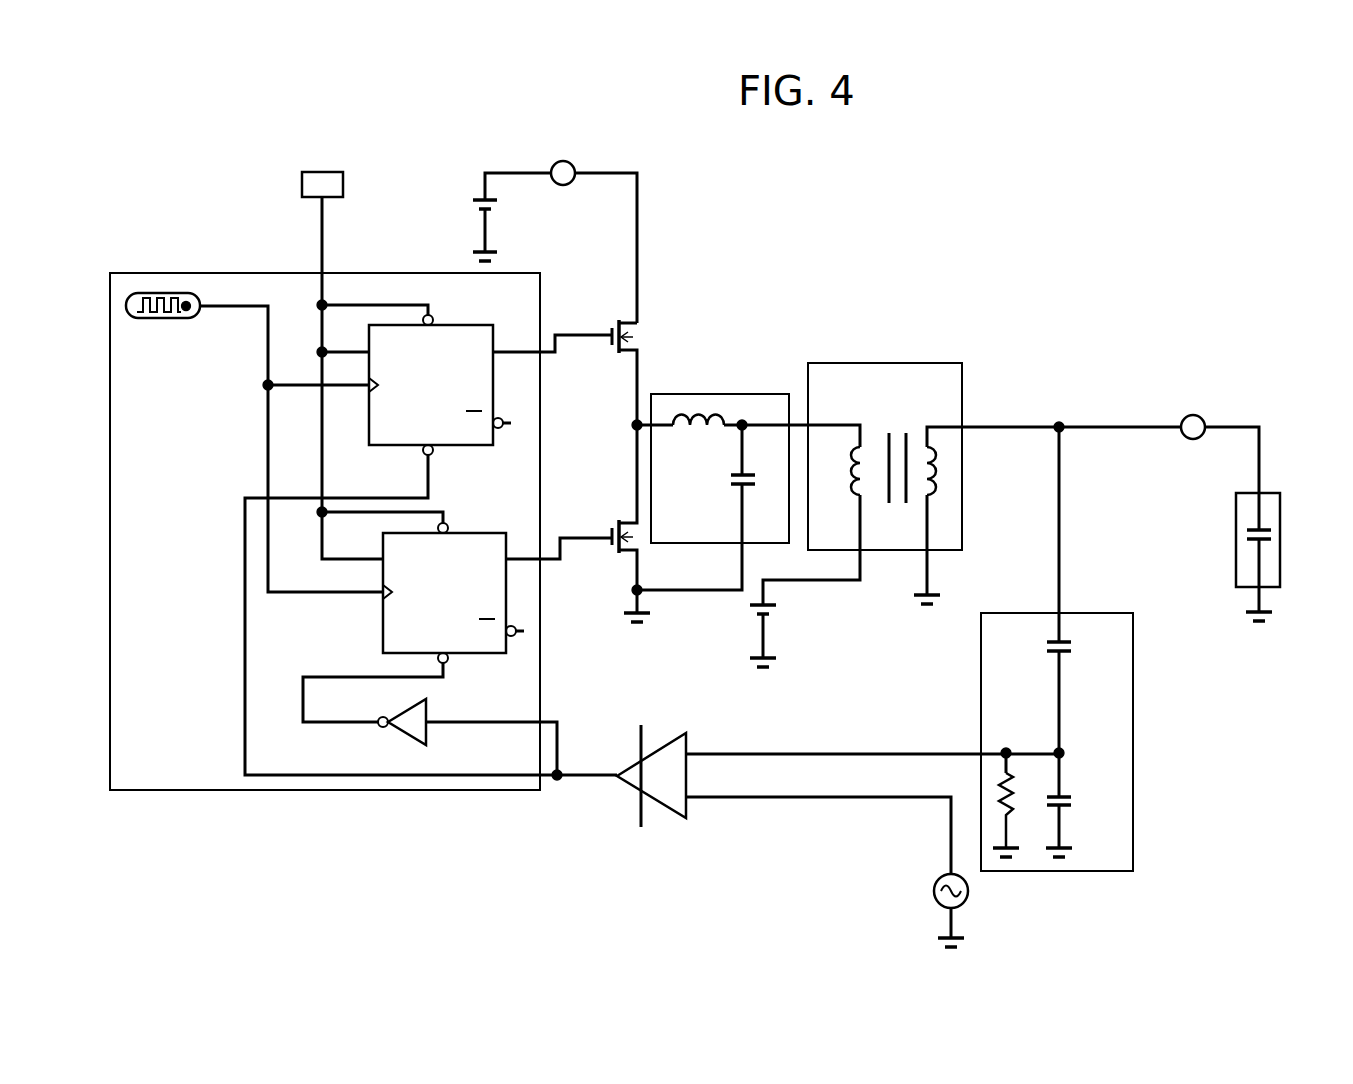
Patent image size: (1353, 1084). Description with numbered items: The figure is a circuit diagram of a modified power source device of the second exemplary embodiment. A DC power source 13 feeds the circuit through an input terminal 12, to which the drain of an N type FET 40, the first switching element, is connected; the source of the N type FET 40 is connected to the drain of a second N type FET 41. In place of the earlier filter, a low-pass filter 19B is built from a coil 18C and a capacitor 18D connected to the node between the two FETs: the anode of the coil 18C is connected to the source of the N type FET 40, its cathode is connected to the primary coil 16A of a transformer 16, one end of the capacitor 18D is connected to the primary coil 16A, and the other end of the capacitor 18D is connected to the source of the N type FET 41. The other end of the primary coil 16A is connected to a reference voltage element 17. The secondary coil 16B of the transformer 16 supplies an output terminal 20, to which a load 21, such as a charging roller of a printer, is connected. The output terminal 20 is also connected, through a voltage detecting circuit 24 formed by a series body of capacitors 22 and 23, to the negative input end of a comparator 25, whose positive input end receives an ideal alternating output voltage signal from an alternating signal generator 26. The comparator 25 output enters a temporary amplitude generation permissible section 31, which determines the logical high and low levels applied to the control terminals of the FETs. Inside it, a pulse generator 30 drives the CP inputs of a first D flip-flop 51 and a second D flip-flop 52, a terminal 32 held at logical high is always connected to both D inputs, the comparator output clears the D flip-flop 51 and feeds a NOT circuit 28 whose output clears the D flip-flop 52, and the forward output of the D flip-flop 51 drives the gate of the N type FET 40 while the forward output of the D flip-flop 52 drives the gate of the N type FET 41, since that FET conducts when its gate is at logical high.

The input terminal 12 is at (566, 187).
The DC power source 13 is at (463, 207).
The transformer 16 is at (941, 363).
The primary coil 16A is at (851, 447).
The secondary coil 16B is at (916, 440).
The reference voltage element 17 is at (778, 613).
The coil 18C is at (690, 409).
The capacitor 18D is at (720, 485).
The low-pass filter 19B is at (760, 392).
The output terminal 20 is at (1200, 412).
The load 21 is at (1234, 556).
The capacitor 22 is at (1077, 647).
The capacitor 23 is at (1079, 800).
The voltage detecting circuit 24 is at (1135, 730).
The comparator 25 is at (632, 787).
The alternating signal generator 26 is at (927, 892).
The NOT circuit 28 is at (395, 735).
The pulse generator 30 is at (166, 320).
The temporary amplitude generation permissible section 31 is at (170, 272).
The terminal 32 is at (300, 181).
The N type FET 40 is at (641, 331).
The N type FET 41 is at (607, 556).
The D flip-flop 51 is at (475, 331).
The D flip-flop 52 is at (472, 531).